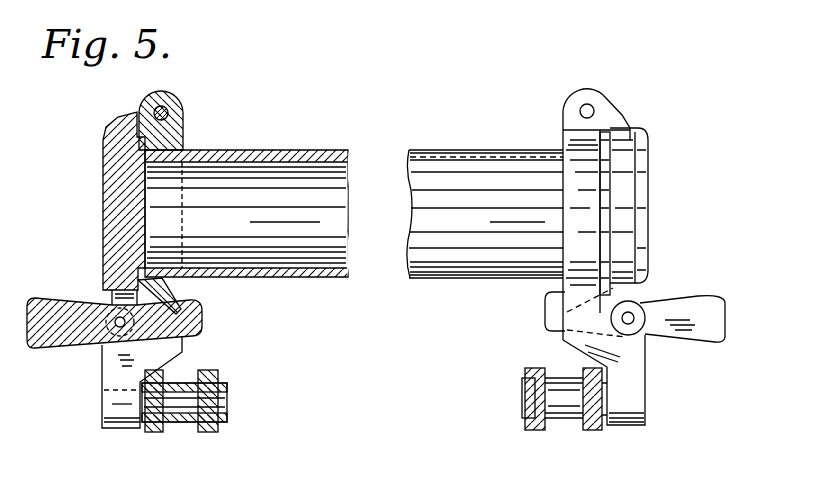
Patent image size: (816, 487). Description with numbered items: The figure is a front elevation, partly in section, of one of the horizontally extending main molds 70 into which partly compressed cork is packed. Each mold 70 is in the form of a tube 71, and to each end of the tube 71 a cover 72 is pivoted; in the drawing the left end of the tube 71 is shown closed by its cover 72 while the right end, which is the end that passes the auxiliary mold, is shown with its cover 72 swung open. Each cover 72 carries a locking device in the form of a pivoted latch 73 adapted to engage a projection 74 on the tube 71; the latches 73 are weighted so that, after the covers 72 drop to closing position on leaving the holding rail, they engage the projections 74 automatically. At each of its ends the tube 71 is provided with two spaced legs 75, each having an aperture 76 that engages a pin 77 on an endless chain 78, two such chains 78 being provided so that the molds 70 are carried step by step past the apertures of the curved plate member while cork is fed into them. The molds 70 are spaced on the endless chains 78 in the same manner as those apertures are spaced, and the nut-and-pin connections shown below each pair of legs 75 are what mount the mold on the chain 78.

The mold 70 is at (485, 214).
The tube 71 is at (304, 150).
The cover 72 is at (104, 213).
The pivoted latch 73 is at (203, 327).
The projection 74 is at (185, 289).
The leg 75 is at (102, 379).
The aperture 76 is at (112, 391).
The pin 77 is at (180, 400).
The endless chain 78 is at (216, 376).